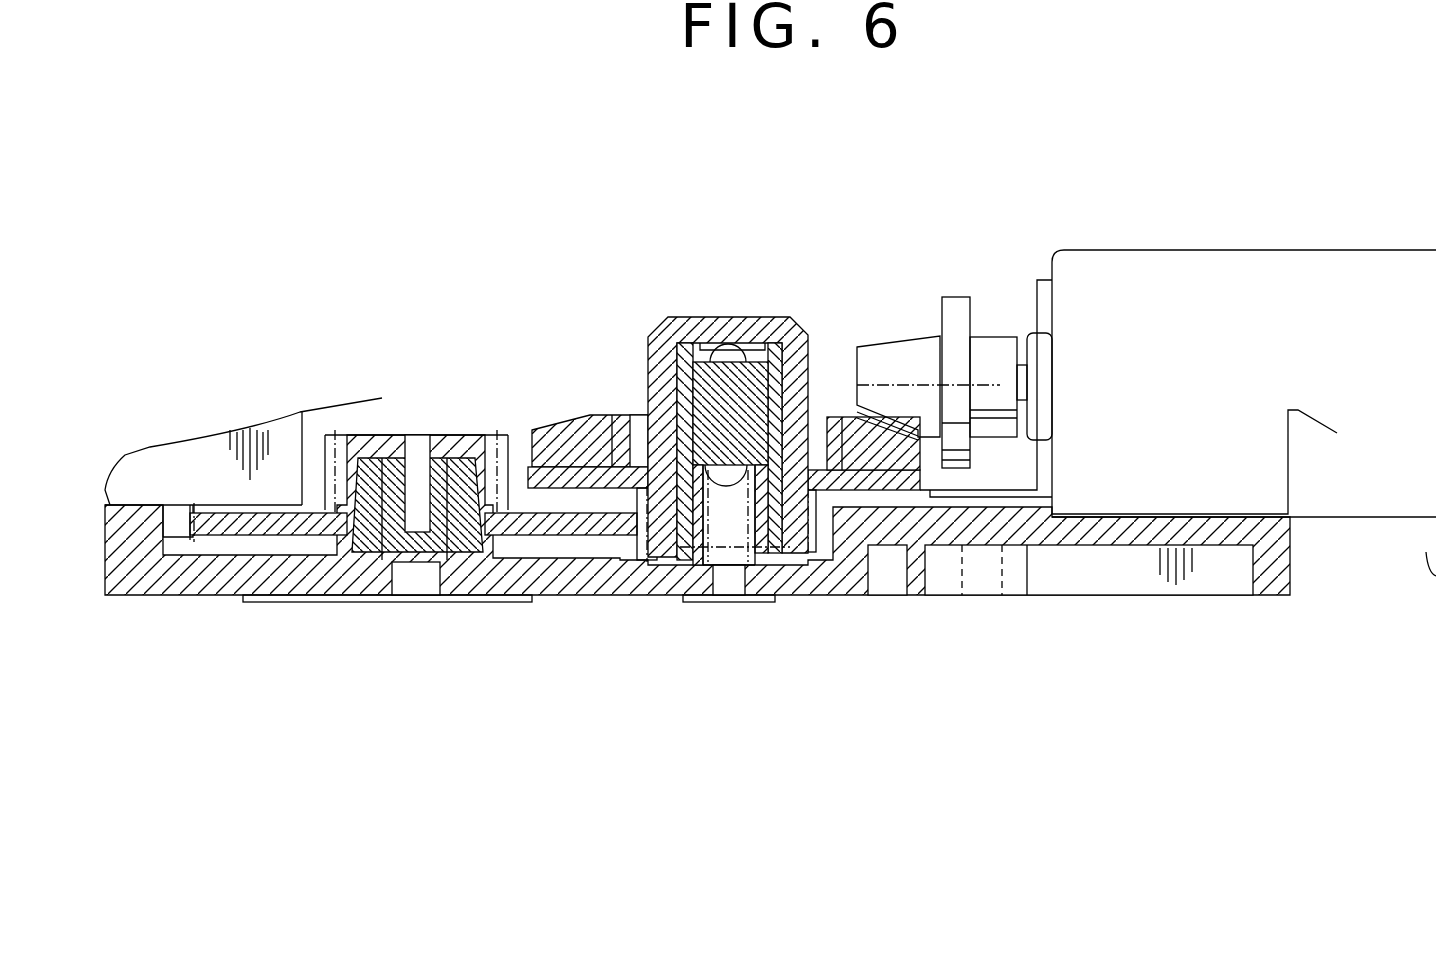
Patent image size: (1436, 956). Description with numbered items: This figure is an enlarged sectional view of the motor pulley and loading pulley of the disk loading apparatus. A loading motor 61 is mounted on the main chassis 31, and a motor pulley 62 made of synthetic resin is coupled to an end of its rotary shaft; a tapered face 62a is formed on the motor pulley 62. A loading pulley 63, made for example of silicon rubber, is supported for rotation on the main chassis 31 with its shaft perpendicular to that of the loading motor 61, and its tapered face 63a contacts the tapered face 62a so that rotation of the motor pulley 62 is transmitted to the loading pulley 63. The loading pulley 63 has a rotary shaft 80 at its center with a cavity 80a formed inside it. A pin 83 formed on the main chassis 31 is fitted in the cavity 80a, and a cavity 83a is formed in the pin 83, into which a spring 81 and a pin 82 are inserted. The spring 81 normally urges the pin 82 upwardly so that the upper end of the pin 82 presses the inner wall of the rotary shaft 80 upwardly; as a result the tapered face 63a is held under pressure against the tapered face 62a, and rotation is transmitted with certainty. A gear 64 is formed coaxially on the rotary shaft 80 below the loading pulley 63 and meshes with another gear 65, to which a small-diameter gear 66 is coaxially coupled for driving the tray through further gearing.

The main chassis 31 is at (1272, 580).
The loading motor 61 is at (1286, 267).
The motor pulley 62 is at (995, 345).
The tapered face 62a is at (905, 340).
The loading pulley 63 is at (863, 458).
The tapered face 63a is at (581, 420).
The gear 64 is at (815, 532).
The gear 65 is at (571, 530).
The gear 66 is at (348, 445).
The rotary shaft 80 is at (801, 337).
The cavity 80a is at (742, 345).
The spring 81 is at (719, 530).
The pin 82 is at (711, 392).
The pin 83 is at (651, 385).
The cavity 83a is at (736, 525).